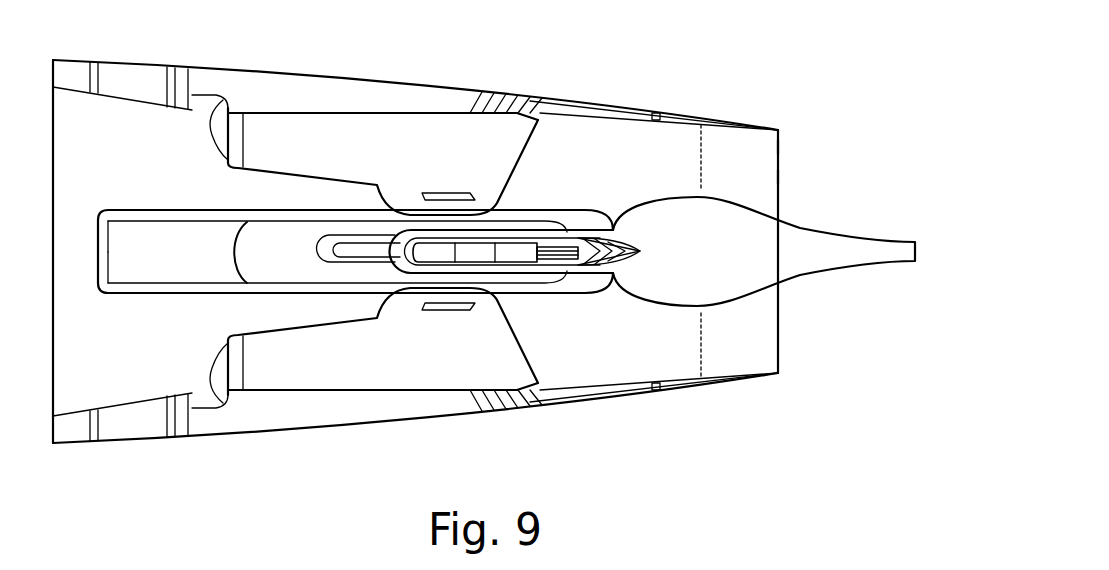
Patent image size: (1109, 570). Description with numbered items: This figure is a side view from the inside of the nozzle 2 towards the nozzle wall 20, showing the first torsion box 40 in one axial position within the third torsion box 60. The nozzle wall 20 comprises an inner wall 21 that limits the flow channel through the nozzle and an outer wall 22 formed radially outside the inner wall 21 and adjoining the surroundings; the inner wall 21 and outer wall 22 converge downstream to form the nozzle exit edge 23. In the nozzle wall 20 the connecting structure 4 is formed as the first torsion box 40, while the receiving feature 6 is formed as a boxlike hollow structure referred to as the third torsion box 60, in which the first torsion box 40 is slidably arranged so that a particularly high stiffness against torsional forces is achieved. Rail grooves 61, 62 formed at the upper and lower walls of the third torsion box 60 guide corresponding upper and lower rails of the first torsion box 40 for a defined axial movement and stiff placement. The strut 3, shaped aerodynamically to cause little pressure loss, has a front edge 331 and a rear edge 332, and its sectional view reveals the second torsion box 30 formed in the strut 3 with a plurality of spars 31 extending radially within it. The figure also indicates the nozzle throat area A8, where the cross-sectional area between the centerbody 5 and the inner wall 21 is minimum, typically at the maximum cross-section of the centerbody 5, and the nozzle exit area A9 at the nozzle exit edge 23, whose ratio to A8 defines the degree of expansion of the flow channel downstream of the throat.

The nozzle 2 is at (466, 264).
The nozzle wall 20 is at (393, 408).
The inner wall 21 is at (596, 378).
The outer wall 22 is at (280, 435).
The nozzle exit edge 23 is at (779, 128).
The strut 3 is at (544, 260).
The second torsion box 30 is at (546, 243).
The spars 31 is at (501, 258).
The front edge 331 is at (388, 252).
The rear edge 332 is at (645, 252).
The connecting structure 4 is at (288, 222).
The first torsion box 40 is at (320, 272).
The centerbody 5 is at (791, 277).
The receiving feature 6 is at (349, 289).
The third torsion box 60 is at (222, 287).
The rail groove 61 is at (190, 234).
The rail groove 62 is at (197, 270).
The nozzle throat area A8 is at (778, 147).
The nozzle exit area A9 is at (780, 176).